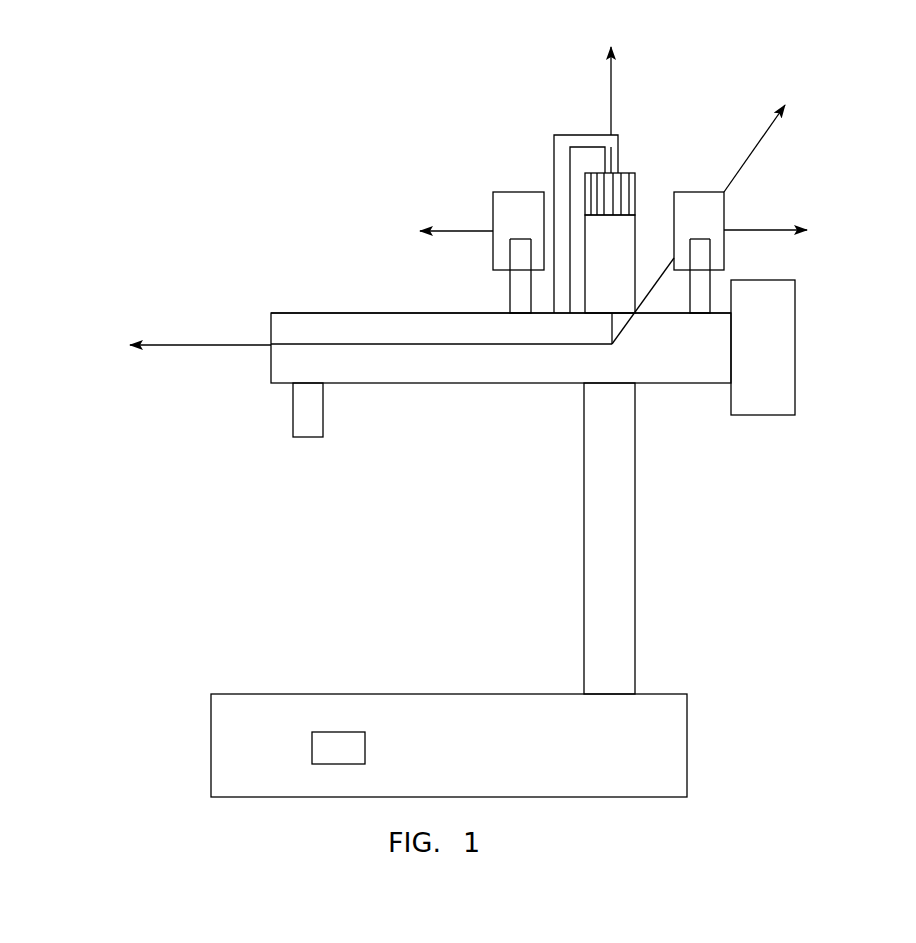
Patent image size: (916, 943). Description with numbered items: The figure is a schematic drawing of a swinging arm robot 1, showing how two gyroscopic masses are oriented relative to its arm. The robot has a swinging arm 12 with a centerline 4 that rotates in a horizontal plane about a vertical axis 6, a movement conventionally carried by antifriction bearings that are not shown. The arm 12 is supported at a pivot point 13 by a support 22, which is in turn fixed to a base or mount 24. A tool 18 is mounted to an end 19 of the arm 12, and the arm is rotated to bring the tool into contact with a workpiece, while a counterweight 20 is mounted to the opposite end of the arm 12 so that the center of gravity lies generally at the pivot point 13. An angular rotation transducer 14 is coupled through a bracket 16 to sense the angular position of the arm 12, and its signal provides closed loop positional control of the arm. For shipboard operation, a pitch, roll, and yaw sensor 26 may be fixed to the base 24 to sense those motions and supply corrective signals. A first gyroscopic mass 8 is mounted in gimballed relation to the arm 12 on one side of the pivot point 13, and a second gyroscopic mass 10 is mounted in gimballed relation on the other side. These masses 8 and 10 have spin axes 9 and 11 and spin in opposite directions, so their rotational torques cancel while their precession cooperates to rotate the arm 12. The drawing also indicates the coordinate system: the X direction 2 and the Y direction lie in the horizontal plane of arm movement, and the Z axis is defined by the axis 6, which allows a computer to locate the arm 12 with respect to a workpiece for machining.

The swinging arm robot 1 is at (307, 153).
The X axis direction 2 is at (757, 143).
The centerline 4 is at (205, 342).
The axis 6 is at (612, 88).
The first gyroscopic mass 8 is at (499, 192).
The spin axis 9 is at (458, 231).
The second gyroscopic mass 10 is at (724, 203).
The spin axis 11 is at (773, 229).
The swinging arm 12 is at (517, 383).
The pivot point 13 is at (637, 383).
The angular rotation transducer 14 is at (637, 188).
The bracket 16 is at (570, 135).
The tool 18 is at (292, 405).
The end 19 is at (272, 322).
The counterweight 20 is at (795, 362).
The support 22 is at (635, 545).
The base 24 is at (520, 754).
The pitch, roll, and yaw sensor 26 is at (365, 747).